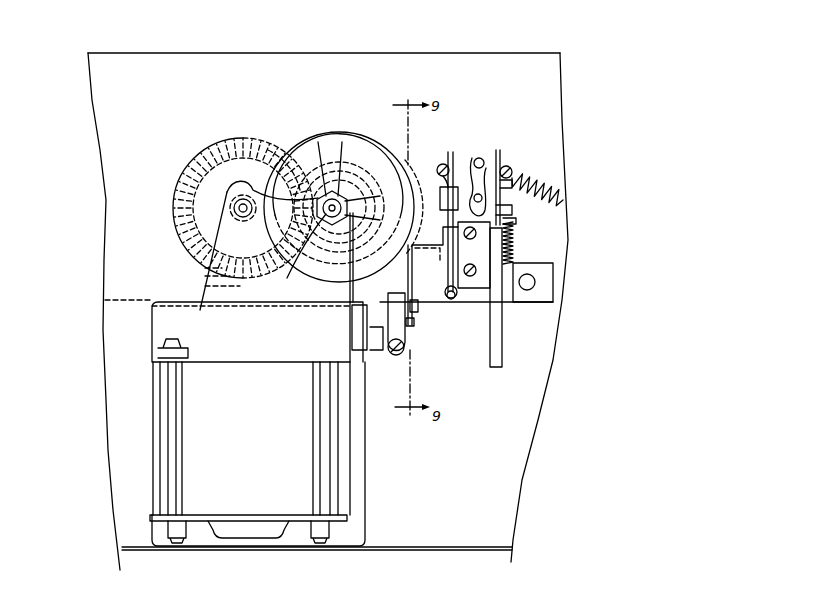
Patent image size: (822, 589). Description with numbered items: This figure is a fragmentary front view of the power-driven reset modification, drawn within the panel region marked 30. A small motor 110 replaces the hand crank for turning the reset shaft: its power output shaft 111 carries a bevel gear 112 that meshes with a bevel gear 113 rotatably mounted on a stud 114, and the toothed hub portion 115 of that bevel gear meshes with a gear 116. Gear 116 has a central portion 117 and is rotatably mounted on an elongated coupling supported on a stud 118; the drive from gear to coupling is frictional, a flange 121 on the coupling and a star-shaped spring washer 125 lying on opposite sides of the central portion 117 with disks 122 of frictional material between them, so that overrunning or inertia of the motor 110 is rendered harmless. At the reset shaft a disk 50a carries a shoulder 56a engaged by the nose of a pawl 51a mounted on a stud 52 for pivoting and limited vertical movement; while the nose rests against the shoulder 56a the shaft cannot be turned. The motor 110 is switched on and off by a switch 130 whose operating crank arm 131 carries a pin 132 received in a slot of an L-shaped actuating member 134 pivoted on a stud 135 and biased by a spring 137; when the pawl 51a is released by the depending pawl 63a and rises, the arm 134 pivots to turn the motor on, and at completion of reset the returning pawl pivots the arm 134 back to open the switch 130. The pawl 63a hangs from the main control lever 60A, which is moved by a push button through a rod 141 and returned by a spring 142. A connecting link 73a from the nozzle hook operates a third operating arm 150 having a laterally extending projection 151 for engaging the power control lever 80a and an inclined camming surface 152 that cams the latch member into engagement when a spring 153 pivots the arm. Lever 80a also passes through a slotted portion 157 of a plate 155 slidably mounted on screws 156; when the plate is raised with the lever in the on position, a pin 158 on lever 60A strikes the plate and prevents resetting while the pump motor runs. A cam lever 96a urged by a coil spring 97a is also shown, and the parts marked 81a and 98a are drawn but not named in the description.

The panel 30 is at (545, 52).
The motor 110 is at (152, 437).
The power output shaft 111 is at (210, 283).
The bevel gear 112 is at (205, 268).
The bevel gear 113 is at (206, 147).
The stud 114 is at (243, 204).
The toothed hub portion 115 is at (230, 217).
The gear 116 is at (262, 144).
The central portion 117 is at (309, 147).
The stud 118 is at (314, 244).
The flange 121 is at (332, 165).
The disks 122 is at (353, 163).
The star-shaped spring washer 125 is at (336, 140).
The disk 50a is at (333, 170).
The pawl 51a is at (397, 167).
The shoulder 56a is at (380, 186).
The switch 130 is at (396, 357).
The operating crank arm 131 is at (405, 335).
The pin 132 is at (416, 306).
The actuating member 134 is at (413, 320).
The stud 135 is at (409, 262).
The spring 137 is at (398, 291).
The rod 141 is at (447, 165).
The spring 142 is at (446, 294).
The operating arm 150 is at (498, 148).
The laterally extending projection 151 is at (508, 189).
The inclined camming surface 152 is at (512, 209).
The spring 153 is at (516, 222).
The plate 155 is at (478, 291).
The screws 156 is at (516, 235).
The slotted portion 157 is at (516, 249).
The pin 158 is at (440, 208).
The stud 52 is at (408, 240).
The main control lever 60A is at (451, 150).
The pawl 63a is at (443, 177).
The connecting link 73a is at (507, 166).
The power control lever 80a is at (505, 295).
The bar 81a is at (495, 368).
The cam lever 96a is at (474, 158).
The coil spring 97a is at (560, 190).
The pivot 98a is at (475, 199).